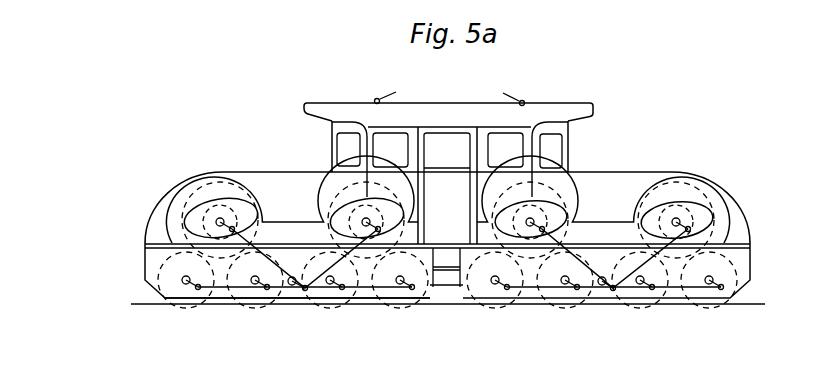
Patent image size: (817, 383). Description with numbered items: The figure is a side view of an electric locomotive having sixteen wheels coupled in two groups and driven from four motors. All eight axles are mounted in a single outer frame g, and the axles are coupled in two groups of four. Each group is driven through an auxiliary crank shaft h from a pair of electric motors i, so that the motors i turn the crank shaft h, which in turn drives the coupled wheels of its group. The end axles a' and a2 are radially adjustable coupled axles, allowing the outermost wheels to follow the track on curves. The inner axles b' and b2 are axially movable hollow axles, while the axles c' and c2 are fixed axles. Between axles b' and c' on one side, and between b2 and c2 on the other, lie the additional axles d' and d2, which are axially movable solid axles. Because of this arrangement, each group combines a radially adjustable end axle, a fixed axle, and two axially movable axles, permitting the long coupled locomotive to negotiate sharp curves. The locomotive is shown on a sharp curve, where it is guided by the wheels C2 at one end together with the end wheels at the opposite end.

The outer frame g is at (150, 247).
The electric motors i is at (228, 190).
The auxiliary crank shaft h is at (292, 277).
The wheels C2 is at (245, 303).
The end axle a2 is at (183, 279).
The fixed axle c2 is at (257, 285).
The additional axle d2 is at (329, 285).
The inner axle b2 is at (399, 285).
The inner axle b' is at (495, 293).
The additional axle d' is at (565, 293).
The fixed axle c' is at (640, 294).
The end axle a' is at (732, 280).